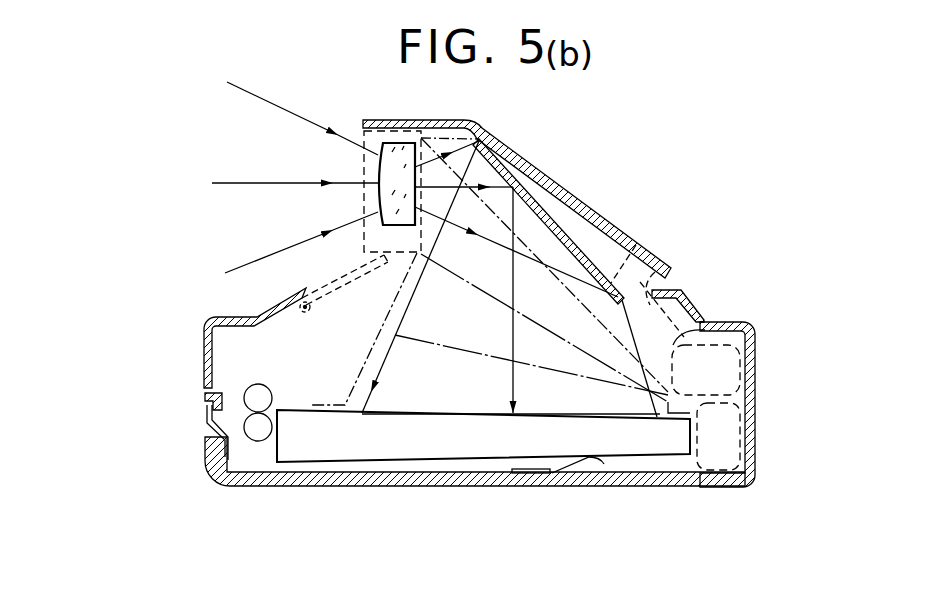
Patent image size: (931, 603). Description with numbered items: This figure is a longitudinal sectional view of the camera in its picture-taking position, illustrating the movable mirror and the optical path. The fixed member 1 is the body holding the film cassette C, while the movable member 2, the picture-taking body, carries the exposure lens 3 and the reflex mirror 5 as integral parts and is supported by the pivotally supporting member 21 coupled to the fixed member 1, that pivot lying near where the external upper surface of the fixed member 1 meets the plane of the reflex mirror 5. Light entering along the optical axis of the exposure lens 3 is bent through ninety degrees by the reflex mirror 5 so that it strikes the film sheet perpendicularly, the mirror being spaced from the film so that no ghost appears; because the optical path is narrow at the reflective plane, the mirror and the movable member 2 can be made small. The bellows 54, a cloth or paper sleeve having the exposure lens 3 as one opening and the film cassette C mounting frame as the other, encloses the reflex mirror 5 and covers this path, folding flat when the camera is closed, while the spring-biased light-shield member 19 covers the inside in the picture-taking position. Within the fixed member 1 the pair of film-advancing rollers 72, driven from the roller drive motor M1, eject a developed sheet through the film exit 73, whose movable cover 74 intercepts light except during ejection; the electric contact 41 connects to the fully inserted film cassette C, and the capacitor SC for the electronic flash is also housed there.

The fixed member 1 is at (463, 478).
The movable member 2 is at (627, 242).
The exposure lens 3 is at (381, 173).
The reflex mirror 5 is at (563, 223).
The light-shield member 19 is at (326, 290).
The pivotally supporting member 21 is at (682, 335).
The electric contact 41 is at (584, 460).
The bellows 54 is at (682, 291).
The film-advancing rollers 72 is at (268, 420).
The film exit 73 is at (205, 428).
The movable cover 74 is at (204, 428).
The capacitor for the electronic flash SC is at (727, 372).
The roller drive motor M1 is at (732, 442).
The film cassette C is at (658, 442).